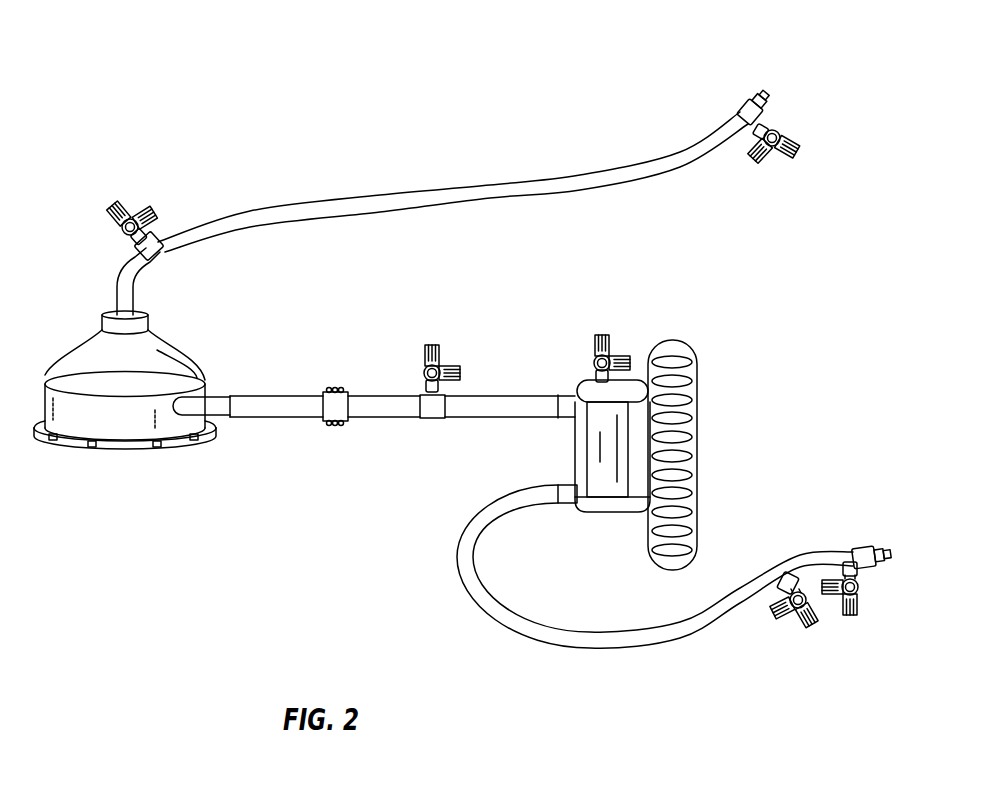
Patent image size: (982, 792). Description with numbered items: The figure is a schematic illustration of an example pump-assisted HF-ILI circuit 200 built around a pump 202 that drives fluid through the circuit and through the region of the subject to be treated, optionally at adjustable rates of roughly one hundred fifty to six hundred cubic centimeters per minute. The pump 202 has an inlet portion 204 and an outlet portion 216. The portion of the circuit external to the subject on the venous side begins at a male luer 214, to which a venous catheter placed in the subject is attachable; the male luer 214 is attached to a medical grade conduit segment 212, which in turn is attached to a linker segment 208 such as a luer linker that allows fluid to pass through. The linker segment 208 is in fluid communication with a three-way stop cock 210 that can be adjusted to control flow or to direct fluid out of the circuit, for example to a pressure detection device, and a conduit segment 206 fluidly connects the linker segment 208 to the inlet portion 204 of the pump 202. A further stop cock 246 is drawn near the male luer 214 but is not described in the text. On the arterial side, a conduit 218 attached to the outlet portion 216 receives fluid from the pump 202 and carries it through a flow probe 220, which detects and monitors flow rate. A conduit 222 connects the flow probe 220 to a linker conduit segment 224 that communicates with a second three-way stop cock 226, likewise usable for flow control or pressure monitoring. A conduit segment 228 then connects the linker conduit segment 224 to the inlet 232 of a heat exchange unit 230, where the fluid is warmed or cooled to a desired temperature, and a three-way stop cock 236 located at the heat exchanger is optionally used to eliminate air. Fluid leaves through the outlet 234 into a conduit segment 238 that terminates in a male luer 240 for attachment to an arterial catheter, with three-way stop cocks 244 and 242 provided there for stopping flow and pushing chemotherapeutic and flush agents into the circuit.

The pump-assisted HF-ILI circuit 200 is at (170, 86).
The pump 202 is at (88, 420).
The inlet portion 204 is at (150, 322).
The conduit segment 206 is at (132, 280).
The linker segment 208 is at (156, 256).
The 3-way stop cock 210 is at (122, 212).
The conduit segment 212 is at (258, 213).
The male luer 214 is at (743, 104).
The outlet portion 216 is at (220, 410).
The conduit 218 is at (280, 414).
The flow probe 220 is at (337, 391).
The conduit 222 is at (395, 412).
The linker conduit segment 224 is at (434, 410).
The 3-way stop cock 226 is at (421, 373).
The conduit segment 228 is at (527, 412).
The heat exchange unit 230 is at (698, 402).
The inlet 232 is at (570, 400).
The outlet 234 is at (568, 495).
The 3-way stop cock 236 is at (610, 338).
The conduit segment 238 is at (547, 640).
The male luer 240 is at (868, 548).
The 3-way stop cock 242 is at (851, 618).
The 3-way stop cock 244 is at (801, 624).
The stopcock 246 is at (785, 126).